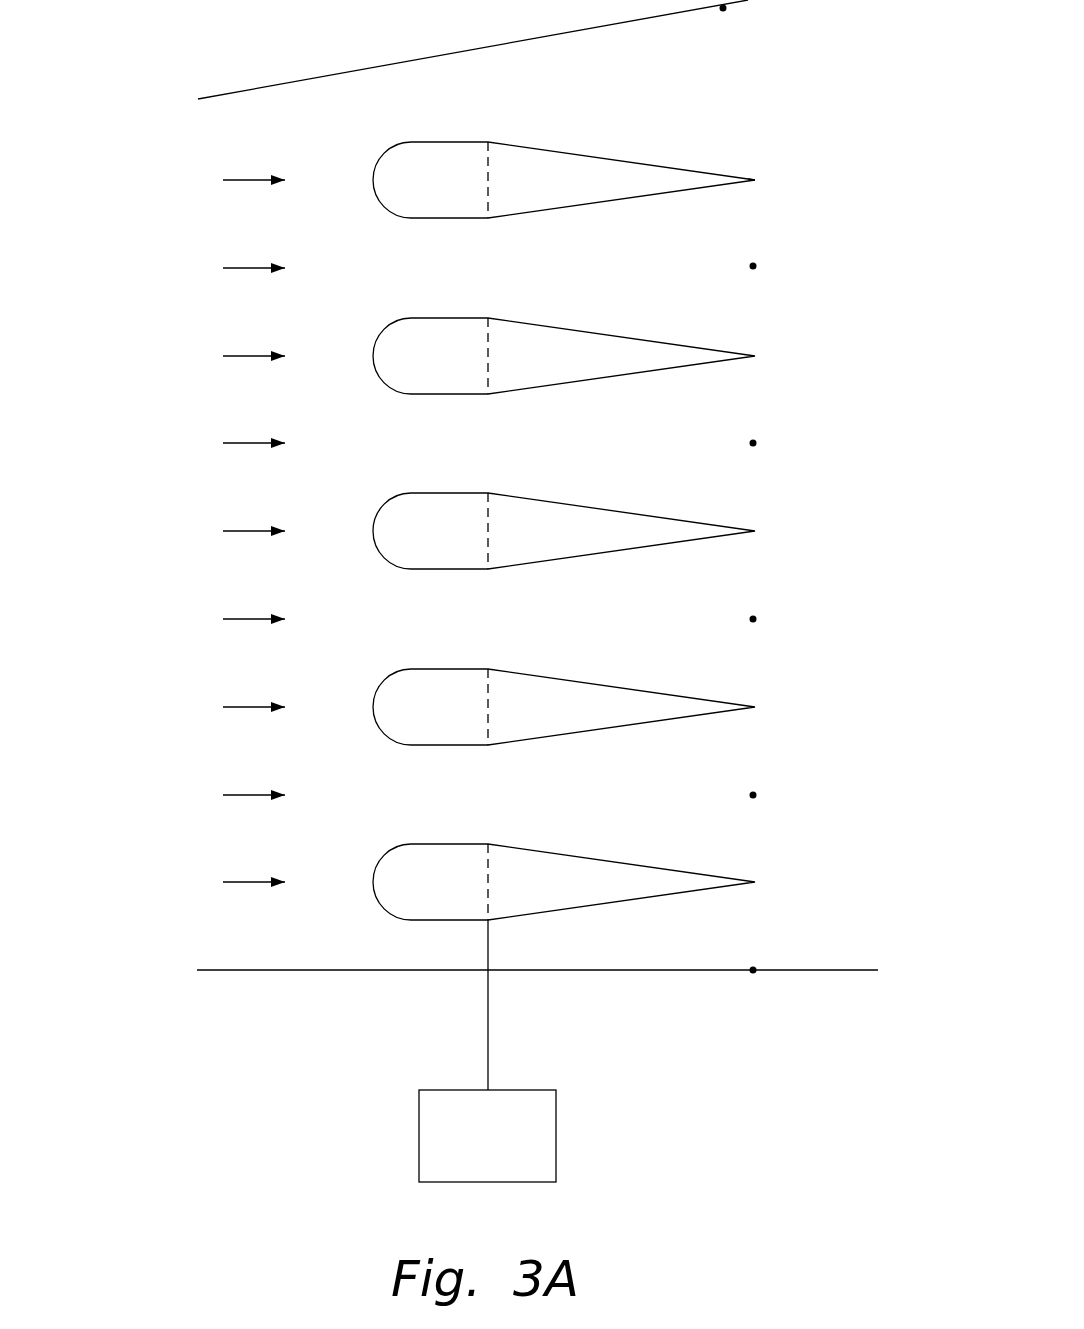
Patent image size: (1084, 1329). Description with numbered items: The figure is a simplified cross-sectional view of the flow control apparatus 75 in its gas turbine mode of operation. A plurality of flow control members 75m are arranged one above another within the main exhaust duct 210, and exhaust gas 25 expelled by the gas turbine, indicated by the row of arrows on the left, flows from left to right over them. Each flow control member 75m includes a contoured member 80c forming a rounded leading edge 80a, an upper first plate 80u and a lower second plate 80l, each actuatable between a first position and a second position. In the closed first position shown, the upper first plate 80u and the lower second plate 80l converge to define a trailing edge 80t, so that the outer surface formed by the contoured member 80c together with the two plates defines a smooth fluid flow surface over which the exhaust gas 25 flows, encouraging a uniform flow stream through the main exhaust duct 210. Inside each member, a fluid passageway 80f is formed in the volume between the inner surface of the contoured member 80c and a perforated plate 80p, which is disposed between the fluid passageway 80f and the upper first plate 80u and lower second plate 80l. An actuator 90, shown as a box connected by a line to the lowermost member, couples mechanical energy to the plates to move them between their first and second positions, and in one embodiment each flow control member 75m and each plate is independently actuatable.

The main exhaust duct 210 is at (351, 70).
The exhaust gas 25 is at (241, 443).
The flow control apparatus 75 is at (147, 148).
The flow control member 75m is at (602, 653).
The leading edge 80a is at (373, 175).
The contoured member 80c is at (385, 213).
The fluid passageway 80f is at (412, 207).
The perforated plate 80p is at (490, 705).
The upper first plate 80u is at (648, 163).
The lower second plate 80l is at (650, 197).
The trailing edge 80t is at (755, 180).
The actuator 90 is at (556, 1130).